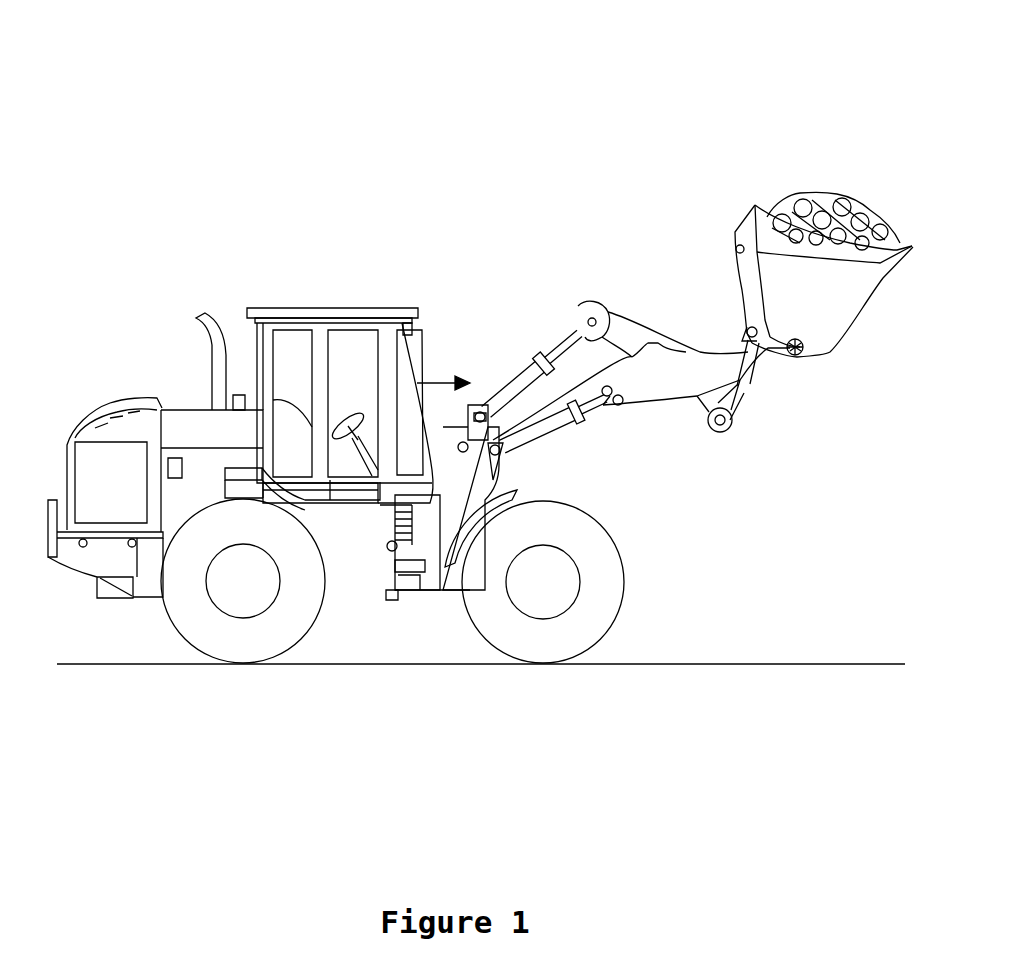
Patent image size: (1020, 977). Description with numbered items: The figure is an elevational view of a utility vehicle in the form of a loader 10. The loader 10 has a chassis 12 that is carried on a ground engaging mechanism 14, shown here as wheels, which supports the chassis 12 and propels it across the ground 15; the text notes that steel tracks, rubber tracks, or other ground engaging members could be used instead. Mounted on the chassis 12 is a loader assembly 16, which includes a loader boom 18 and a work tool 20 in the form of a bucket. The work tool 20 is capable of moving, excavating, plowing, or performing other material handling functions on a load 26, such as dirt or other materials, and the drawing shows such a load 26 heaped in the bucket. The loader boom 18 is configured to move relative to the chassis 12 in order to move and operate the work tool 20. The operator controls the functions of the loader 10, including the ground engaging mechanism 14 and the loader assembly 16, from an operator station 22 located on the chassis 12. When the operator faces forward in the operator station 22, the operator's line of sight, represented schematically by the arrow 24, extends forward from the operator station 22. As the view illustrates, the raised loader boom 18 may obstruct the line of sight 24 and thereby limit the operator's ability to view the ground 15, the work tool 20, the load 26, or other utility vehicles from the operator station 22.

The loader 10 is at (493, 147).
The chassis 12 is at (344, 634).
The ground engaging mechanism 14 is at (243, 645).
The ground 15 is at (800, 666).
The loader assembly 16 is at (732, 447).
The loader boom 18 is at (622, 327).
The work tool 20 is at (857, 298).
The operator station 22 is at (356, 345).
The line of sight 24 is at (445, 383).
The load 26 is at (820, 200).